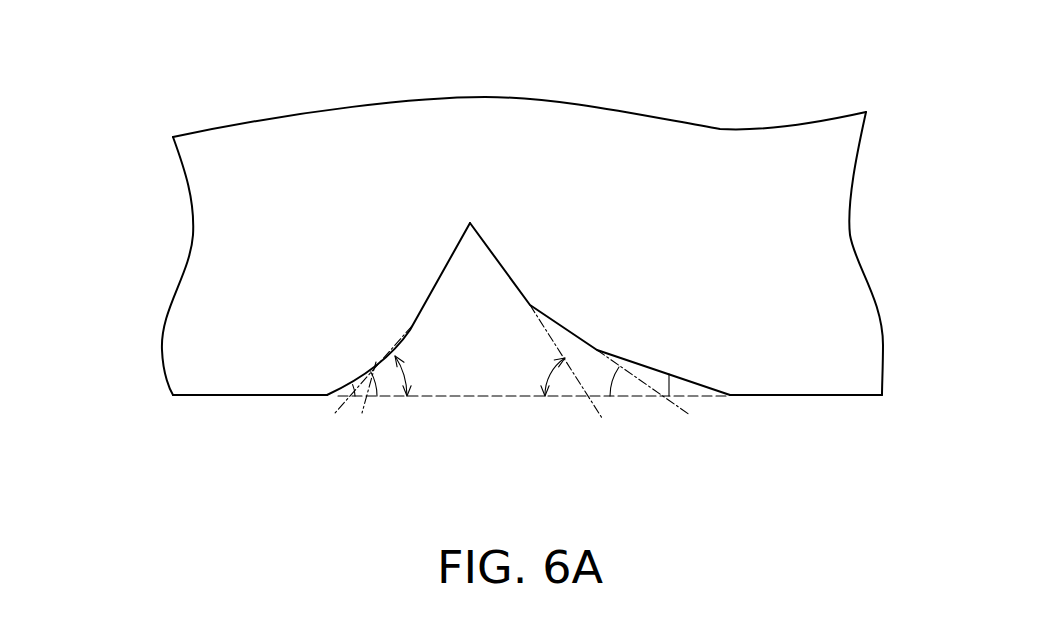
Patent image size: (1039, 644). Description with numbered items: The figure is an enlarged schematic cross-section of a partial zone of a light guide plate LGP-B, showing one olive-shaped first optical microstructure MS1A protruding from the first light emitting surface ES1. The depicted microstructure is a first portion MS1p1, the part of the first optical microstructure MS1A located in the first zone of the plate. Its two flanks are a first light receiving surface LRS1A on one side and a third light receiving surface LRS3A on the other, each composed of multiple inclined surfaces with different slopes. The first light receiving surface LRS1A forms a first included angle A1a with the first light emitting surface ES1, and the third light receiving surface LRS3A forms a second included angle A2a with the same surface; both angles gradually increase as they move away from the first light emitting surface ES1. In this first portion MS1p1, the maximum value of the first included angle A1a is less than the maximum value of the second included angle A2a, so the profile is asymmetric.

The light guide plate LGP-B is at (867, 347).
The first light emitting surface ES1 is at (842, 397).
The first optical microstructure MS1A is at (528, 201).
The first portion MS1p1 is at (528, 218).
The third light receiving surface LRS3A is at (435, 285).
The first light receiving surface LRS1A is at (560, 323).
The second included angle A2a is at (399, 358).
The first included angle A1a is at (672, 393).